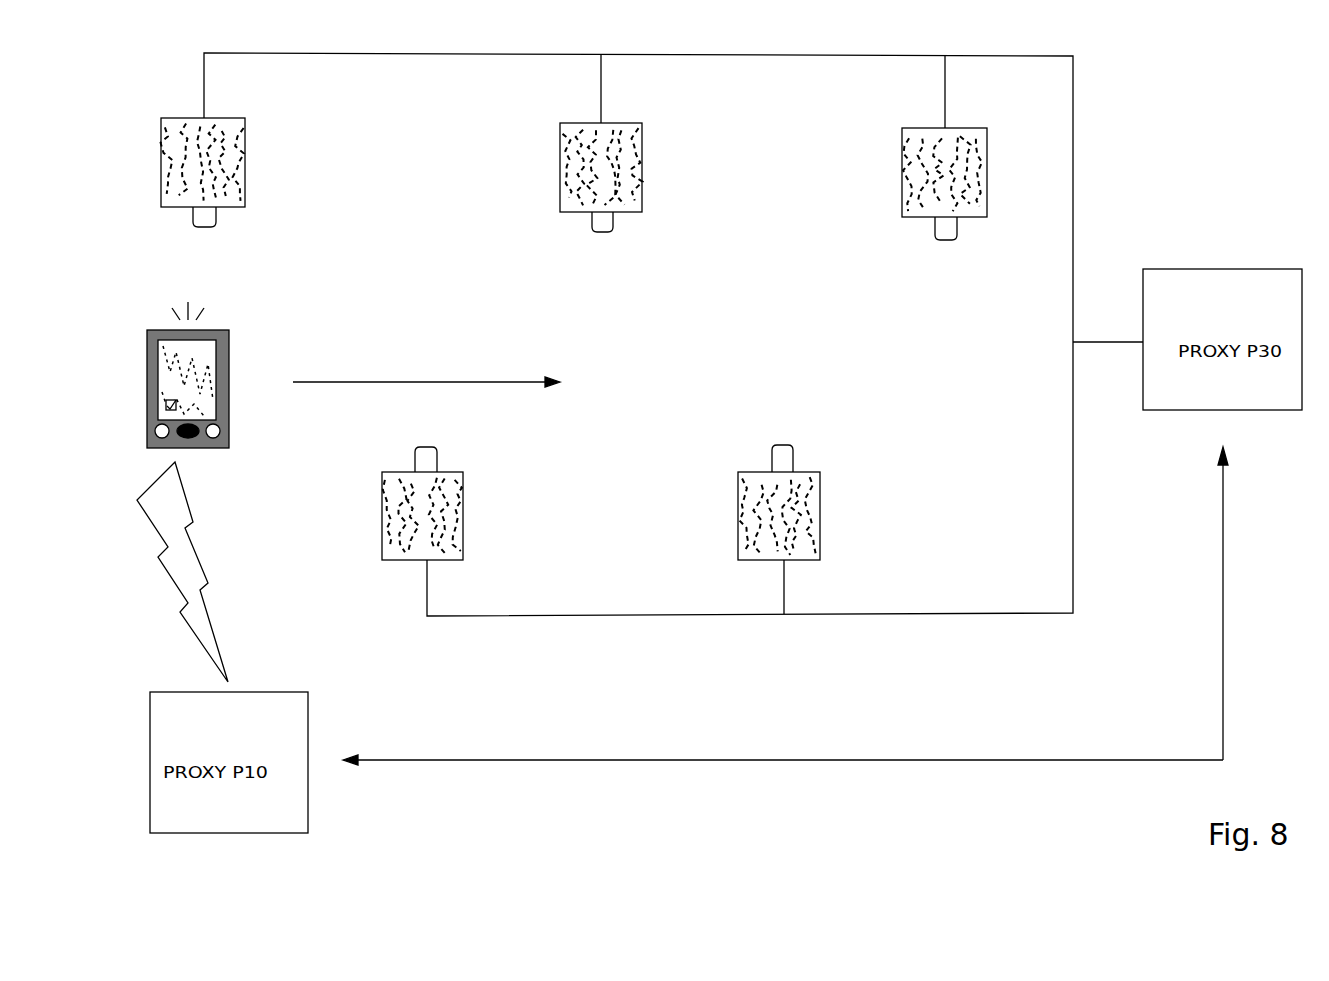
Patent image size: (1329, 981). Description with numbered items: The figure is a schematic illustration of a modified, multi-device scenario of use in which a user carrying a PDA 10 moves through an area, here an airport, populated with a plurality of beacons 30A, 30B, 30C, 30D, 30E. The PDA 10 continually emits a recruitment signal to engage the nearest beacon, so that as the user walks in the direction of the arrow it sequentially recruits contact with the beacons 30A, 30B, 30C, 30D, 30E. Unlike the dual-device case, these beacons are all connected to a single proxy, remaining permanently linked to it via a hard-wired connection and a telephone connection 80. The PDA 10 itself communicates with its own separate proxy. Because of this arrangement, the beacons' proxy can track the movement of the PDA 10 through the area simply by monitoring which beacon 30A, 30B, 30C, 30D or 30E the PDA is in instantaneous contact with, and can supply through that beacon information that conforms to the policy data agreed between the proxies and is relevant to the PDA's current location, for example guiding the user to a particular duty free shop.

The telephone connection 80 is at (1074, 77).
The beacon 30A is at (245, 163).
The beacon 30B is at (452, 493).
The beacon 30C is at (642, 168).
The beacon 30D is at (805, 493).
The beacon 30E is at (902, 170).
The PDA 10 is at (217, 343).